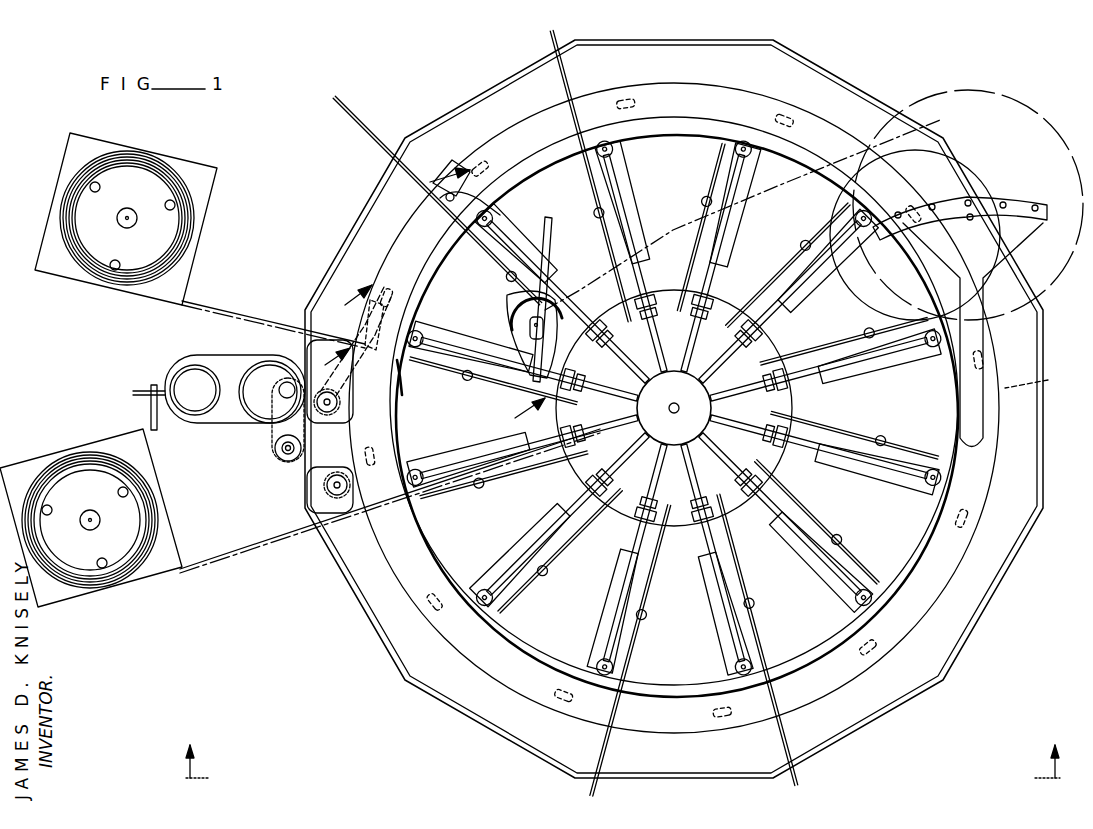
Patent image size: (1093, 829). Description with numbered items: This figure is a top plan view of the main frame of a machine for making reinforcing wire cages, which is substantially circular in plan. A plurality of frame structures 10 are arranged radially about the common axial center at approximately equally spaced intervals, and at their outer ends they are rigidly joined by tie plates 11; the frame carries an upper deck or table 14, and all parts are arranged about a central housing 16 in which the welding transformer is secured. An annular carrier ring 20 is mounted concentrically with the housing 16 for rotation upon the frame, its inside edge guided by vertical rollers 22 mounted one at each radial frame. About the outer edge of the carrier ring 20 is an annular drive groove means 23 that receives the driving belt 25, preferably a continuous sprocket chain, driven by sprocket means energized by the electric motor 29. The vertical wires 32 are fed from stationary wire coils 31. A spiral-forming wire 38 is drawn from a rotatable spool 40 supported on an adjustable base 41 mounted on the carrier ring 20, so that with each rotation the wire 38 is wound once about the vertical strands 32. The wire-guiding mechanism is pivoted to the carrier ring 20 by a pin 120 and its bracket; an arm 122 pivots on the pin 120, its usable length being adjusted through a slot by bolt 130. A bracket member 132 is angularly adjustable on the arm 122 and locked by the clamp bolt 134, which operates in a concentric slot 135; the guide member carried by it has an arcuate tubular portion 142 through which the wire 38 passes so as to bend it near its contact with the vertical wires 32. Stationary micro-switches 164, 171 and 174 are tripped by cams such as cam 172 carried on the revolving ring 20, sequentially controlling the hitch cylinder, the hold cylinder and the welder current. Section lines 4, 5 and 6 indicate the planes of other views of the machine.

The tie plates 11 is at (478, 98).
The annular drive groove means 23 is at (410, 584).
The cam 172 is at (383, 452).
The annular carrier ring 20 is at (410, 526).
The central housing 16 is at (686, 434).
The vertical rollers 22 is at (738, 154).
The frame structures 10 is at (712, 278).
The tubular portion 142 is at (646, 392).
The bolt 130 is at (541, 246).
The arm 122 is at (502, 246).
The bracket member 132 is at (515, 334).
The slot 135 is at (515, 311).
The clamp bolt 134 is at (560, 290).
The pin 120 is at (440, 200).
The fixed micro-switch 164 is at (398, 373).
The micro-switch 171 is at (380, 280).
The fixed micro-switch 174 is at (388, 262).
The wire 38 is at (668, 232).
The rotatable spool 40 is at (955, 92).
The adjustable base 41 is at (984, 256).
The upper deck or table 14 is at (1038, 379).
The electric motor 29 is at (196, 402).
The driving belt 25 is at (281, 462).
The wire coil 31 is at (107, 280).
The vertical wires 32 is at (258, 296).
The section line 4 is at (348, 334).
The section line 5 is at (619, 761).
The section line 6 is at (487, 287).